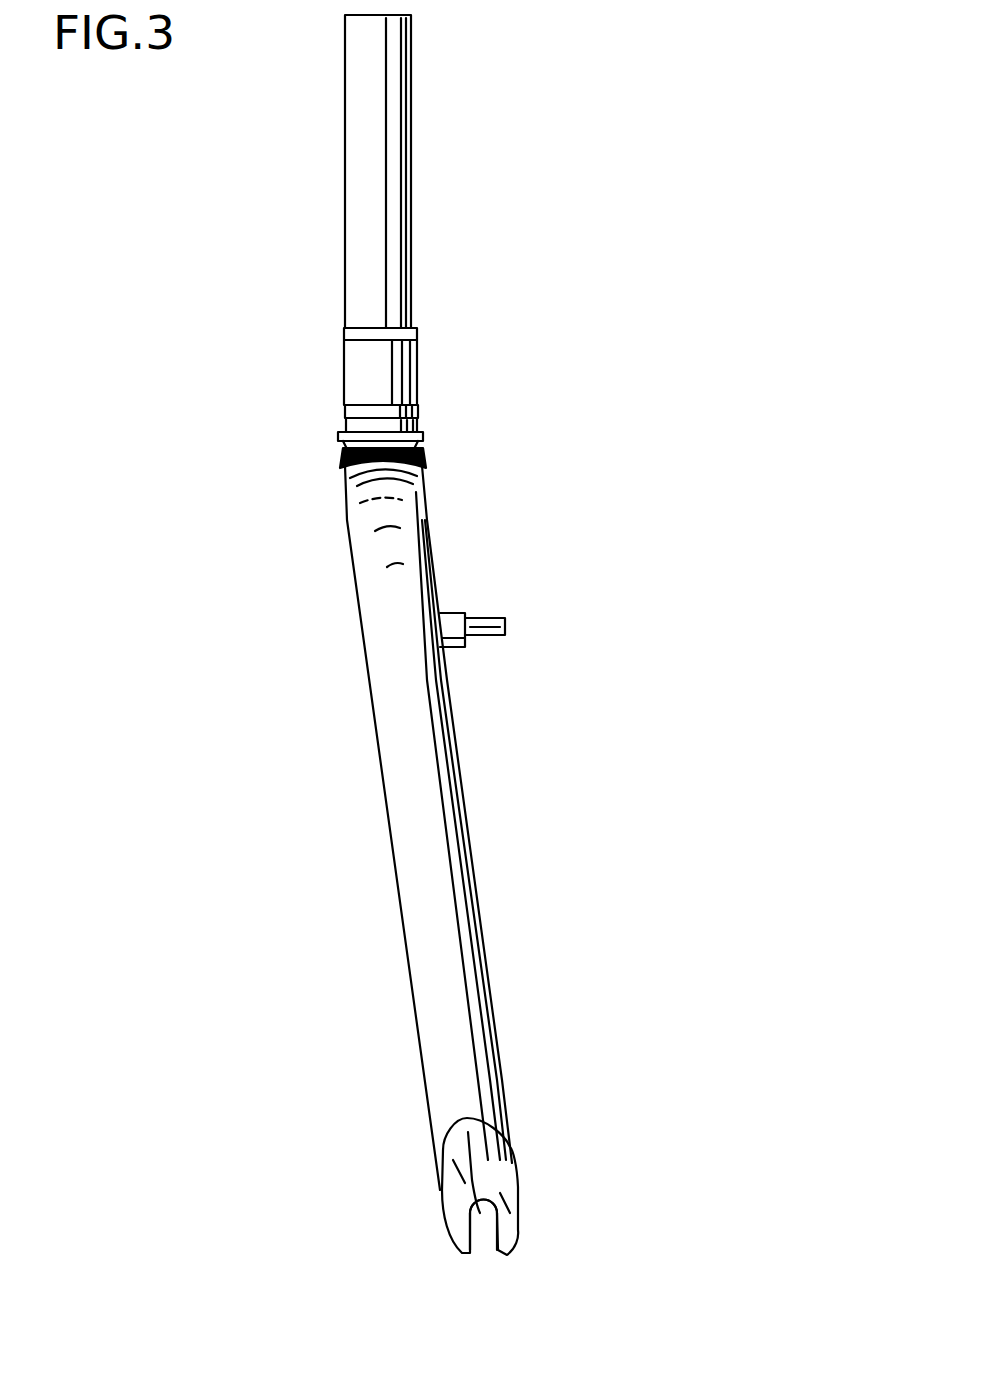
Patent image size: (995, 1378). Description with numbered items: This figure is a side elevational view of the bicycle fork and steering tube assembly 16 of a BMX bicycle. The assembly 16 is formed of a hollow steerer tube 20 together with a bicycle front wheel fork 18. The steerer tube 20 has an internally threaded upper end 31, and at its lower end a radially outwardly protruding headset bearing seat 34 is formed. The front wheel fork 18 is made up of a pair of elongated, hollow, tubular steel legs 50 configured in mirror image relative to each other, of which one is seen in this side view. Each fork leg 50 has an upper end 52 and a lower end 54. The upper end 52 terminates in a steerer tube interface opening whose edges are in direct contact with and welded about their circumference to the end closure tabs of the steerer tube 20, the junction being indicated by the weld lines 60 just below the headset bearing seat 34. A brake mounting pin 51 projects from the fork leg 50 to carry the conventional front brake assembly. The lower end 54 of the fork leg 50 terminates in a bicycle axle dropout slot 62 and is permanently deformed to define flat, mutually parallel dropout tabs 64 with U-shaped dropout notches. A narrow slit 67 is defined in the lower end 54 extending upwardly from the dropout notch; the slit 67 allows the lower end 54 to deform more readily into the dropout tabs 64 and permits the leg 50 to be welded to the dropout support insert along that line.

The bicycle fork and steering tube assembly 16 is at (638, 327).
The bicycle front wheel fork 18 is at (535, 746).
The steerer tube 20 is at (457, 217).
The internally threaded upper end 31 is at (393, 50).
The headset bearing seat 34 is at (425, 435).
The tubular fork legs 50 is at (435, 802).
The brake mounting pins 51 is at (483, 632).
The upper end of fork leg 52 is at (360, 502).
The lower end of fork leg 54 is at (507, 1112).
The weld lines 60 is at (345, 453).
The bicycle axle dropout slots 62 is at (482, 1235).
The dropout tabs 64 is at (513, 1218).
The narrow slits 67 is at (475, 1167).